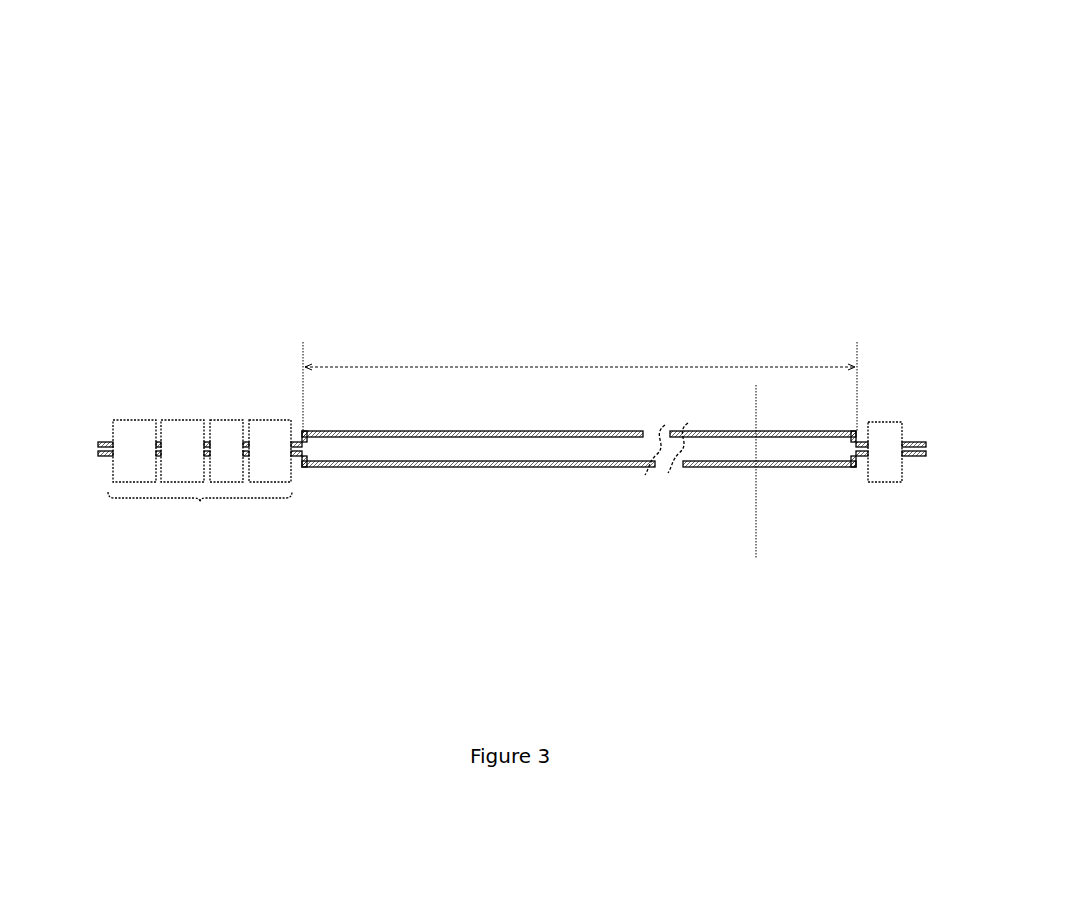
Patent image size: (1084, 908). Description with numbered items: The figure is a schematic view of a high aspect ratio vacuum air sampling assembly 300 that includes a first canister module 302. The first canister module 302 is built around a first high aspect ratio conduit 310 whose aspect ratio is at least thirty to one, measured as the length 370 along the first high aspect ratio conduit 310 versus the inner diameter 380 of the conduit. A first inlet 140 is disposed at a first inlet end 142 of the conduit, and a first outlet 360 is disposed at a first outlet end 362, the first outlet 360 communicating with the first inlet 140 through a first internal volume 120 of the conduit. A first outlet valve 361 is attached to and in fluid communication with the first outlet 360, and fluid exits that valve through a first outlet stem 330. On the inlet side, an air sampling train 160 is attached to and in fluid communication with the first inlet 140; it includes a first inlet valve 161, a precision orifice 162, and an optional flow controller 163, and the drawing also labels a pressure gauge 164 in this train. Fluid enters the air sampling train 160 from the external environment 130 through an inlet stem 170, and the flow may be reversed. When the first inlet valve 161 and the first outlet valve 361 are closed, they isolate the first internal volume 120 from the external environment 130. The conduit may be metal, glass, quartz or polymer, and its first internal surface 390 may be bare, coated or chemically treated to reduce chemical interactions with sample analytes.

The high aspect ratio vacuum air sampling assembly 300 is at (170, 95).
The first canister module 302 is at (205, 70).
The external environment 130 is at (528, 172).
The air sampling train 160 is at (196, 380).
The first inlet valve 161 is at (222, 418).
The precision orifice 162 is at (142, 418).
The flow controller 163 is at (173, 418).
The pressure gauge 164 is at (259, 418).
The inlet stem 170 is at (95, 452).
The first inlet 140 is at (308, 442).
The first inlet end 142 is at (297, 455).
The first internal volume 120 is at (370, 467).
The first high aspect ratio conduit 310 is at (579, 493).
The first internal surface 390 is at (547, 431).
The length 370 is at (580, 383).
The inner diameter 380 is at (752, 498).
The first outlet 360 is at (848, 430).
The first outlet end 362 is at (852, 468).
The first outlet valve 361 is at (884, 483).
The first outlet stem 330 is at (917, 442).